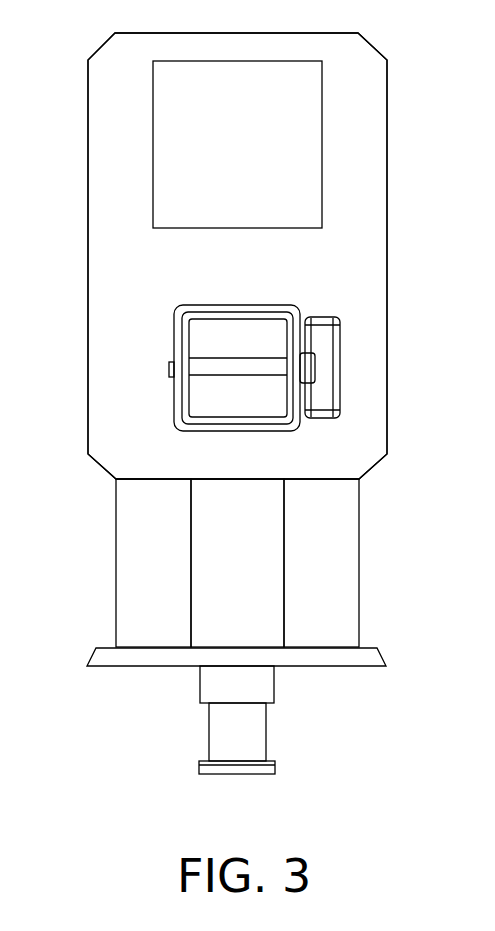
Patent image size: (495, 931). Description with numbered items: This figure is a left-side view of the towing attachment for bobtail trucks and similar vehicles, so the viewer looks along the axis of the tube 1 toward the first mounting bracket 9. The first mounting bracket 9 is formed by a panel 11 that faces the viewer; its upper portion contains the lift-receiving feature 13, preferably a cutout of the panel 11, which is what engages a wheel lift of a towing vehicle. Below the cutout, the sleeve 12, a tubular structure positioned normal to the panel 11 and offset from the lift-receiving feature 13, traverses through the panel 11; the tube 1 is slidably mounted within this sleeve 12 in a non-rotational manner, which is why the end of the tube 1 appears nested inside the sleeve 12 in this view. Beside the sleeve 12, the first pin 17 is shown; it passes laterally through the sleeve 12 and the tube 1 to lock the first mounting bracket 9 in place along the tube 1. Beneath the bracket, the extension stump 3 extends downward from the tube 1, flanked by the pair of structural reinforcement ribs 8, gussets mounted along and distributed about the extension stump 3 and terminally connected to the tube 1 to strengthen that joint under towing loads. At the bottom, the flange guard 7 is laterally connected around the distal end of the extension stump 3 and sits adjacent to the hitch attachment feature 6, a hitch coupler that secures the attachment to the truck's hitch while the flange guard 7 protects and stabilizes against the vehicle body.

The tube 1 is at (235, 317).
The extension stump 3 is at (275, 582).
The hitch attachment feature 6 is at (257, 740).
The flange guard 7 is at (100, 653).
The plurality of structural reinforcement ribs 8 is at (127, 533).
The first mounting bracket 9 is at (375, 263).
The panel 11 is at (237, 256).
The sleeve 12 is at (177, 385).
The lift-receiving feature 13 is at (202, 168).
The first pin 17 is at (315, 365).